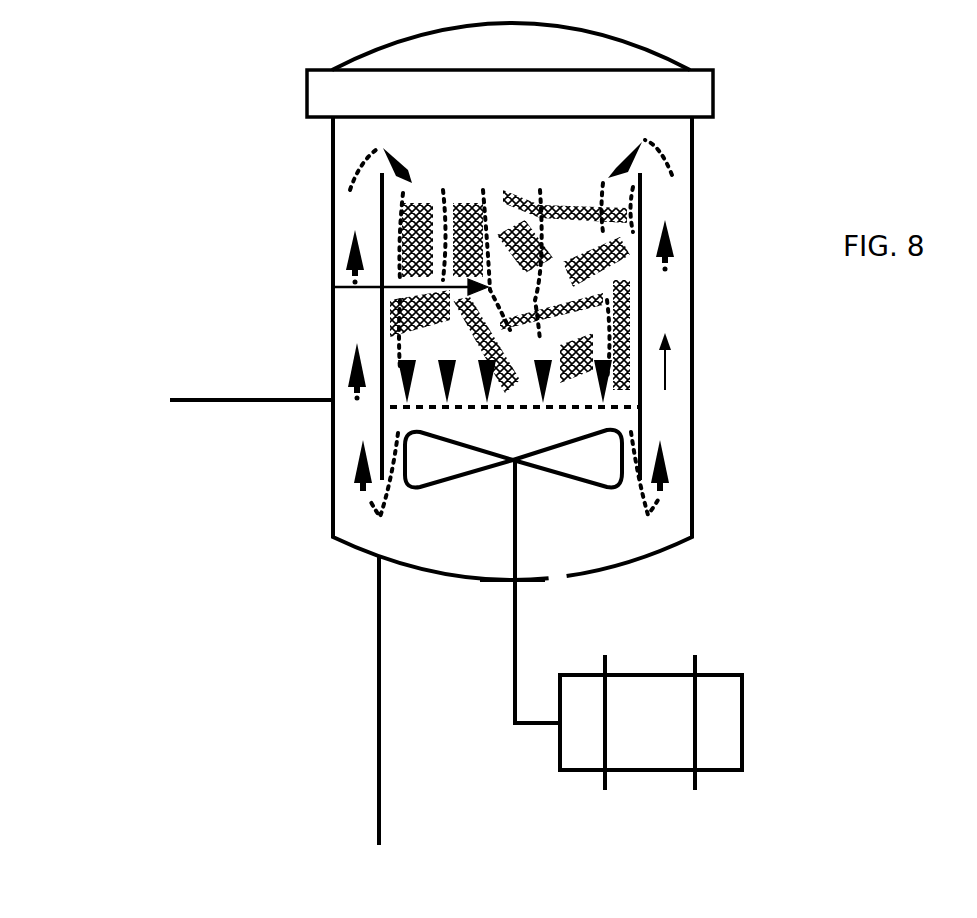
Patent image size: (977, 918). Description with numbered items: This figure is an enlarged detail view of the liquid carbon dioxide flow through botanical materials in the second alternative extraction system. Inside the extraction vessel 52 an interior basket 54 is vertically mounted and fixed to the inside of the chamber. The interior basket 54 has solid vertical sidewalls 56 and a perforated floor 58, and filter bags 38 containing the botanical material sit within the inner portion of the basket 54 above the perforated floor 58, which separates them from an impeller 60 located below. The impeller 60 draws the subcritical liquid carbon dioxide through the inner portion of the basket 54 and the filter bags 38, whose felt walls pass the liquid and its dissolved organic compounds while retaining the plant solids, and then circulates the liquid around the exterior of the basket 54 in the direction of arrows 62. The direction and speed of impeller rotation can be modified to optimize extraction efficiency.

The filter bag 38 is at (627, 229).
The extraction vessel 52 is at (700, 434).
The interior basket 54 is at (644, 292).
The solid vertical sidewalls 56 is at (381, 397).
The perforated floor 58 is at (568, 412).
The impeller 60 is at (565, 487).
The arrows 62 is at (360, 162).